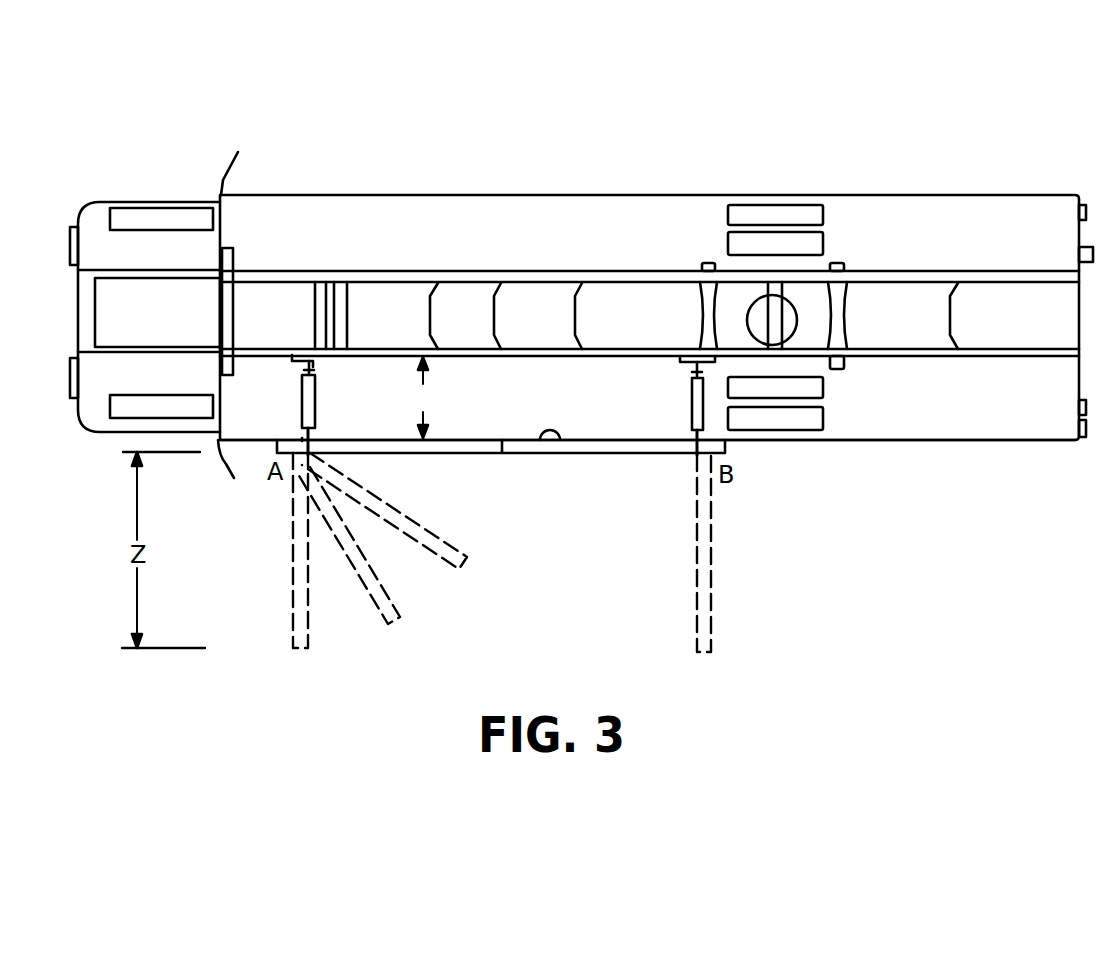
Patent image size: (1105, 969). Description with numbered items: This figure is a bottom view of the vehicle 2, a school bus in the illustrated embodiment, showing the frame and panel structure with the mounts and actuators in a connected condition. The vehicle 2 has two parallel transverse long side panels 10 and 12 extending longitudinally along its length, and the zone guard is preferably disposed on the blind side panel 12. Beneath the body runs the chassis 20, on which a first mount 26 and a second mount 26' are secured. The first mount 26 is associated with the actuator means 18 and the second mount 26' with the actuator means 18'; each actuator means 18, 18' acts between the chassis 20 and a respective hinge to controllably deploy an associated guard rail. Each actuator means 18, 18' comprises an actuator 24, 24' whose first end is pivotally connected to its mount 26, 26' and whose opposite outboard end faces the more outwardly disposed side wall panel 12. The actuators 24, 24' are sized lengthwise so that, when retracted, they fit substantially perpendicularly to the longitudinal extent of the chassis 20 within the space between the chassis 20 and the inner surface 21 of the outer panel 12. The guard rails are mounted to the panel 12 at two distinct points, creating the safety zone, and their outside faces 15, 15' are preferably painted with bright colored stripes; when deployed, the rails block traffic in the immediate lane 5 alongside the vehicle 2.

The vehicle 2 is at (907, 195).
The long side panel 10 is at (613, 195).
The side wall panel 12 is at (870, 441).
The outside face 15 is at (347, 550).
The outside face 15' is at (745, 553).
The actuator means 18 is at (344, 415).
The actuator means 18' is at (659, 432).
The chassis 20 is at (495, 357).
The inner surface 21 is at (543, 433).
The actuator 24 is at (278, 387).
The actuator 24' is at (681, 424).
The first mount 26 is at (278, 371).
The second mount 26' is at (639, 421).
The immediate lane 5 is at (420, 397).